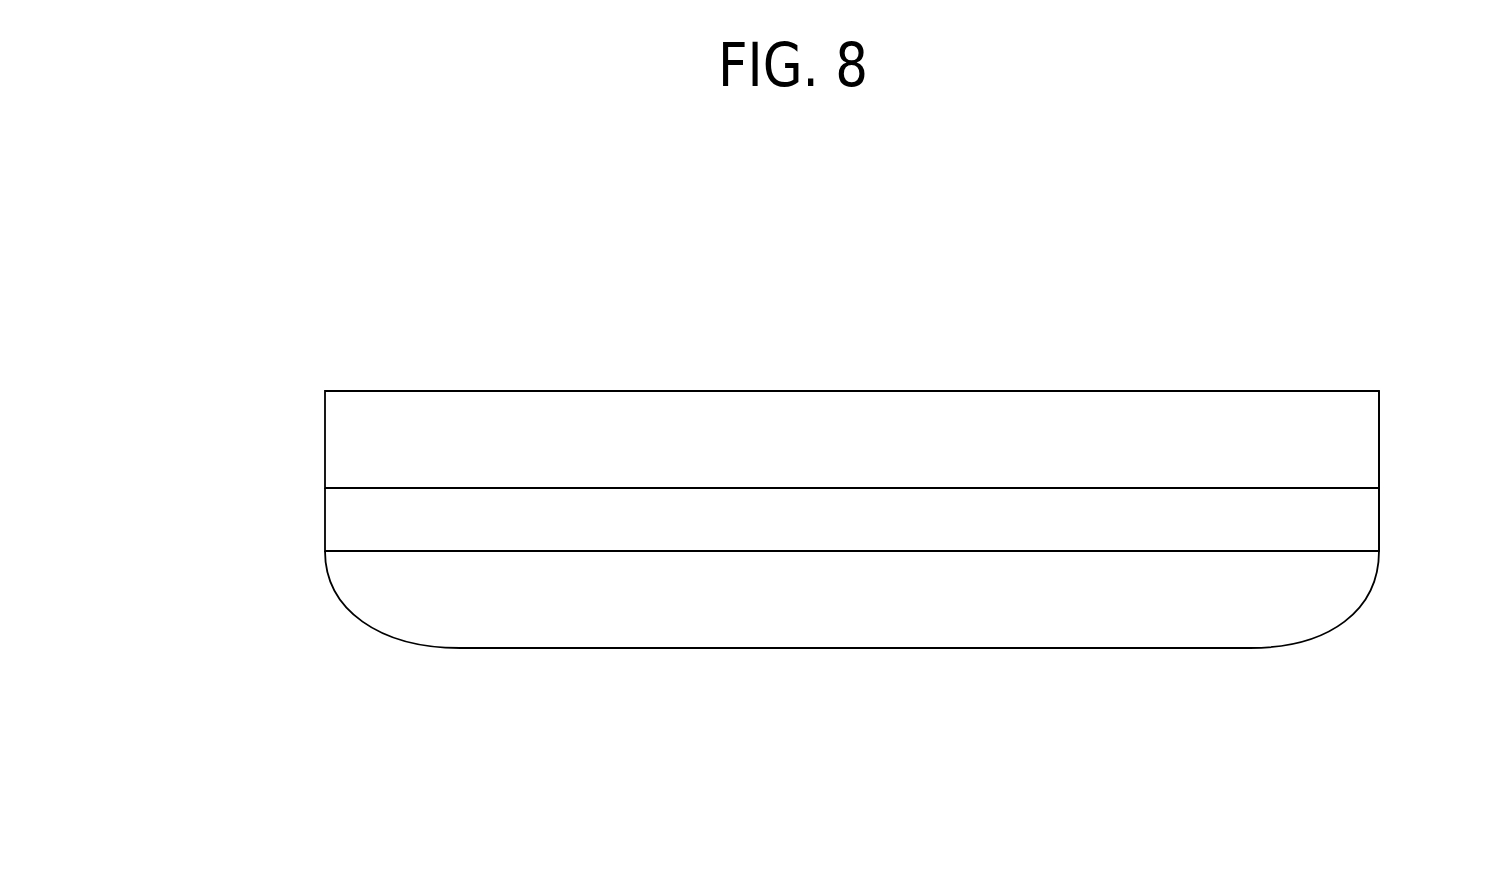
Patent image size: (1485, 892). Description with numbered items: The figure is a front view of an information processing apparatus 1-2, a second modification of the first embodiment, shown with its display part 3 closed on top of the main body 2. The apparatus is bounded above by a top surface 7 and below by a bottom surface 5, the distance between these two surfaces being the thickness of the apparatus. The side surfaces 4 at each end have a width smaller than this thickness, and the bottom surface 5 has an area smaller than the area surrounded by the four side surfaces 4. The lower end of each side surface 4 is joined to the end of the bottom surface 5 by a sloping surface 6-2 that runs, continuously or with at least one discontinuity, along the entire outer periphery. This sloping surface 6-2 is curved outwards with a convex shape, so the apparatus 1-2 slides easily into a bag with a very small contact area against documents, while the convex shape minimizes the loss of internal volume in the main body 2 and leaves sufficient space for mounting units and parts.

The information processing apparatus 1-2 is at (1198, 238).
The main body 2 is at (343, 533).
The display part 3 is at (340, 435).
The side surface 4 is at (1380, 447).
The bottom surface 5 is at (960, 647).
The sloping surface 6-2 is at (1327, 627).
The top surface 7 is at (870, 390).